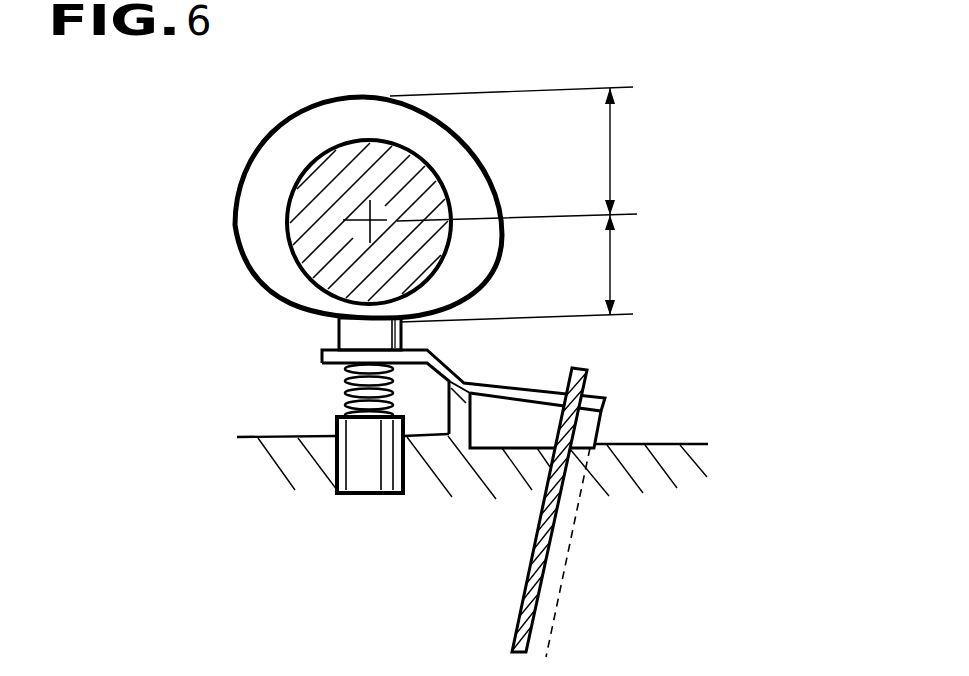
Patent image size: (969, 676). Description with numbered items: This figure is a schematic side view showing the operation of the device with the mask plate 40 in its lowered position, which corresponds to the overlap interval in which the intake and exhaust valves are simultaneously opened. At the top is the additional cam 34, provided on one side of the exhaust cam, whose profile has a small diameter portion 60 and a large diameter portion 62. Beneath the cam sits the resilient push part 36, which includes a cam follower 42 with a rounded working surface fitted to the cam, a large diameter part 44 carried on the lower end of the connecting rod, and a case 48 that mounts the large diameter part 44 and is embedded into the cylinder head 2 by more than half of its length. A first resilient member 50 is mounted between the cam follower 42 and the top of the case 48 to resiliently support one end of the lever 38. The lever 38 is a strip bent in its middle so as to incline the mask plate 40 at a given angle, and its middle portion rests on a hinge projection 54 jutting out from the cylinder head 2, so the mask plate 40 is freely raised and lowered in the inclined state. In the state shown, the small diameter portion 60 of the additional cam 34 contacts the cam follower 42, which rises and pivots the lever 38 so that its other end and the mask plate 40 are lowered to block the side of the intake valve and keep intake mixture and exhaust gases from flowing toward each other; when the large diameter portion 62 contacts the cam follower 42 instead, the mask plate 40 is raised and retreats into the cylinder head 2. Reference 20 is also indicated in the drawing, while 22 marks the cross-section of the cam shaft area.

The cylinder head 2 is at (298, 473).
The mounting assembly 20 is at (404, 333).
The shaft 22 is at (337, 178).
The additional cam 34 is at (270, 180).
The resilient push part 36 is at (296, 376).
The lever 38 is at (520, 383).
The mask plate 40 is at (527, 605).
The cam follower 42 is at (335, 338).
The large diameter part 44 is at (347, 377).
The case 48 is at (372, 473).
The first resilient member 50 is at (347, 400).
The hinge projection 54 is at (497, 428).
The small diameter portion 60 is at (531, 268).
The large diameter portion 62 is at (523, 154).